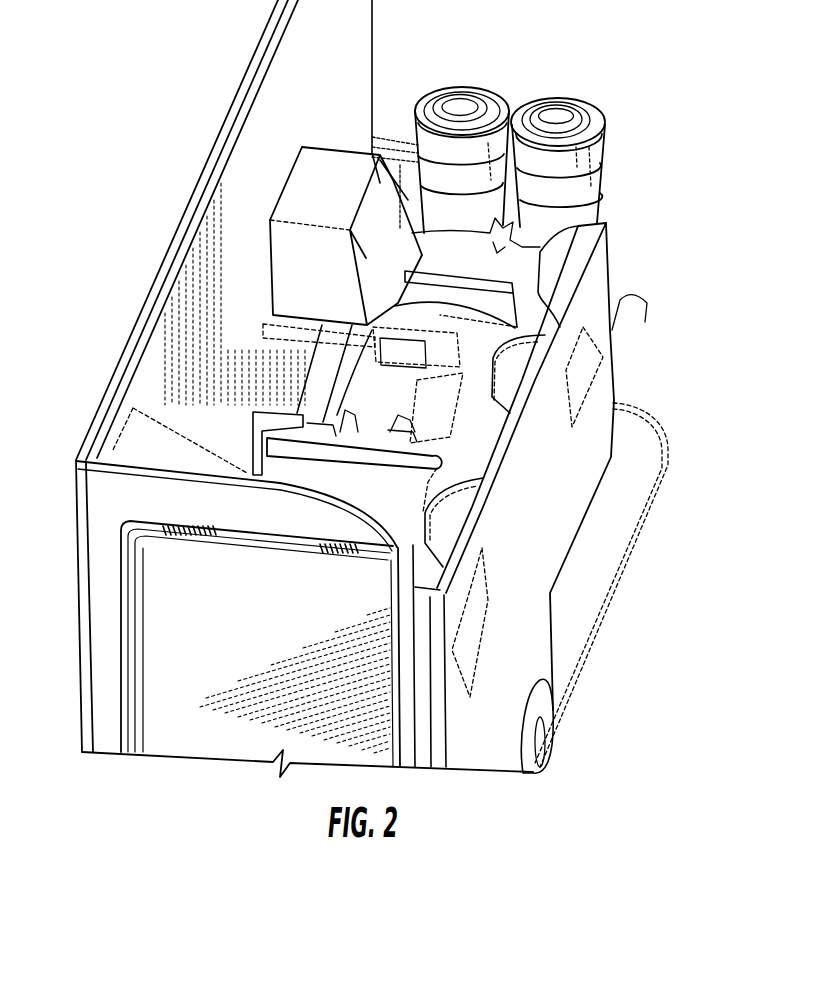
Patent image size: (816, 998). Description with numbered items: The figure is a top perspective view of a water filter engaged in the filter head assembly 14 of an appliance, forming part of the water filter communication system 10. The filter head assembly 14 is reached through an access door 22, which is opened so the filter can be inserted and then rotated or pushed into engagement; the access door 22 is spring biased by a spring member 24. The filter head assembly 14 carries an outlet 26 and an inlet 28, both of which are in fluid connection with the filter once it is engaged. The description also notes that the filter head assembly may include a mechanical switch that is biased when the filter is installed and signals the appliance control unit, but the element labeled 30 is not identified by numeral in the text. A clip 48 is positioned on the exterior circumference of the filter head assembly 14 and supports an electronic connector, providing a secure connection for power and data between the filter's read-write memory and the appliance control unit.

The water filter communication system 10 is at (655, 183).
The filter head assembly 14 is at (622, 265).
The access door 22 is at (253, 621).
The spring member 24 is at (190, 527).
The outlet 26 is at (467, 83).
The inlet 28 is at (564, 94).
The control module 30 is at (325, 277).
The clip 48 is at (373, 392).